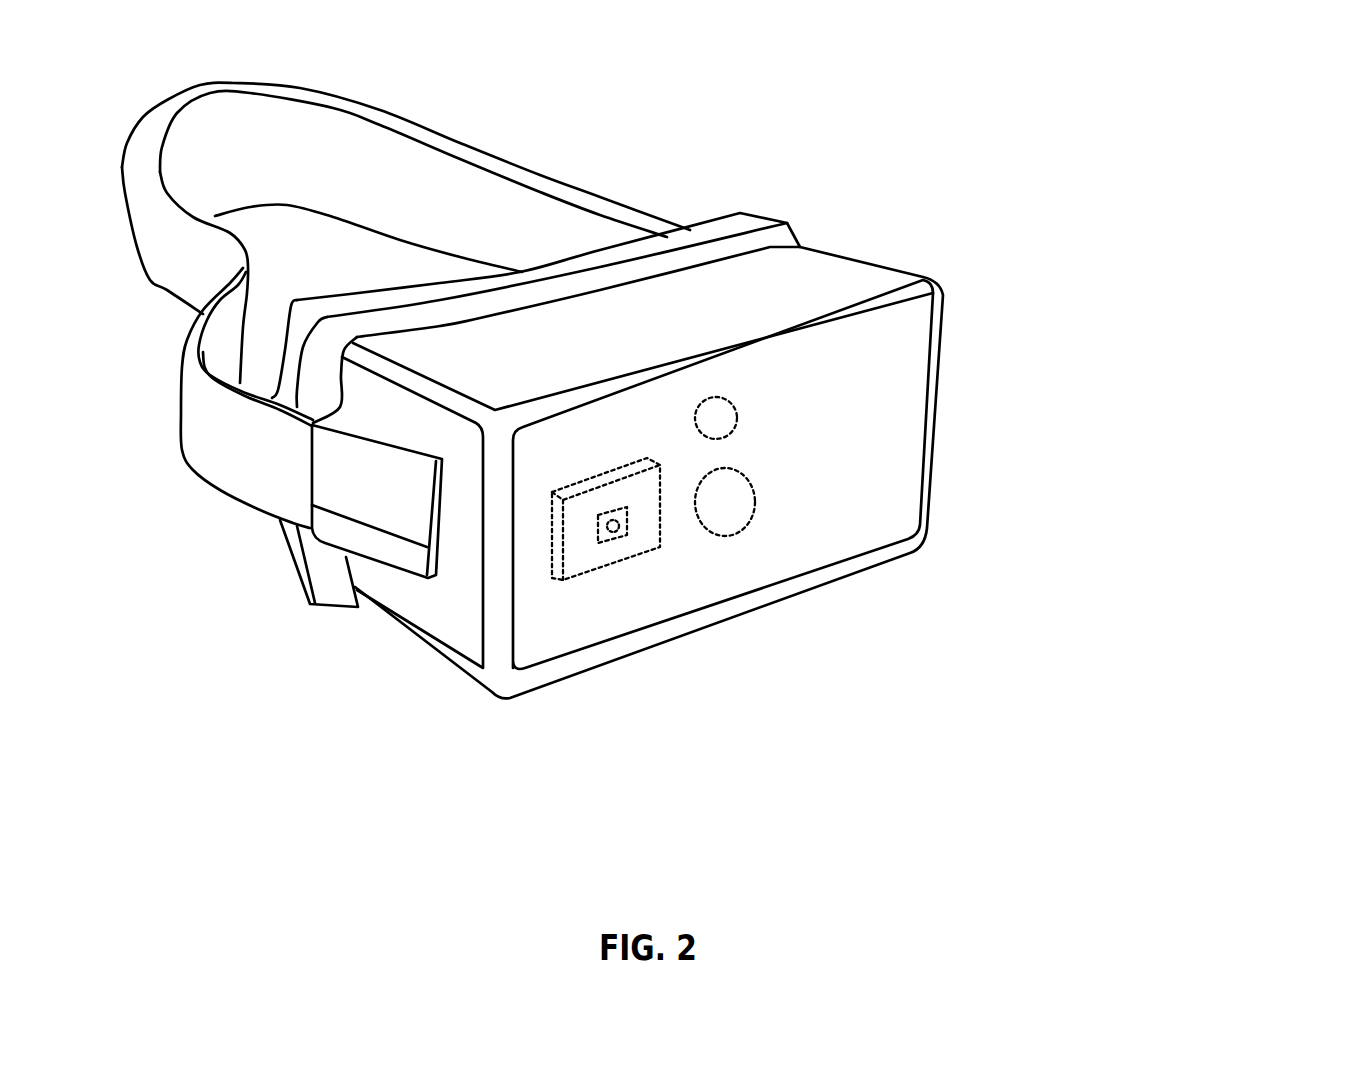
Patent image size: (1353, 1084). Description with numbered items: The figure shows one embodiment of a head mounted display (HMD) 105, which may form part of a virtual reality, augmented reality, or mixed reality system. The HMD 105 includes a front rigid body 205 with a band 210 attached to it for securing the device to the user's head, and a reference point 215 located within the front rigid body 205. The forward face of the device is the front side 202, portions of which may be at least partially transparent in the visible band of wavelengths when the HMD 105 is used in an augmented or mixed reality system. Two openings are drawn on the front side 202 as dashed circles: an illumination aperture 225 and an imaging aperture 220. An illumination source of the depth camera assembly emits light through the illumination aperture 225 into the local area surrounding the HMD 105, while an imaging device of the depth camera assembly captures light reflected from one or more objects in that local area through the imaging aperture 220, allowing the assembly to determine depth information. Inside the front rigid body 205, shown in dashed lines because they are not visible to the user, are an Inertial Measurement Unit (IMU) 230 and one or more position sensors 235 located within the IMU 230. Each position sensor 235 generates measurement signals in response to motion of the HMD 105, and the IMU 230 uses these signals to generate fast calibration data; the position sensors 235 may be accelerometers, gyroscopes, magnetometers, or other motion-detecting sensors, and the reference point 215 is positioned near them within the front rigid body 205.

The head mounted display (HMD) 105 is at (1040, 65).
The band 210 is at (540, 170).
The front rigid body 205 is at (937, 280).
The front side 202 is at (838, 470).
The illumination aperture 225 is at (730, 402).
The imaging aperture 220 is at (754, 501).
The Inertial Measurement Unit (IMU) 230 is at (660, 540).
The position sensors 235 is at (600, 543).
The reference point 215 is at (614, 532).